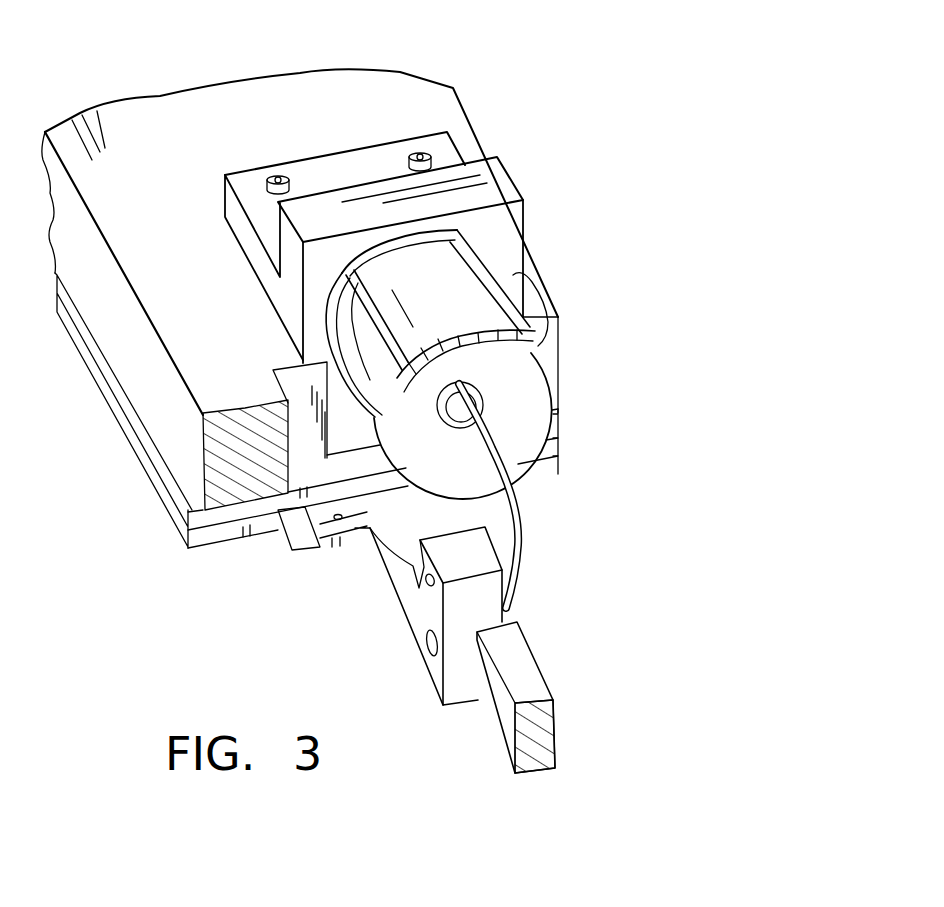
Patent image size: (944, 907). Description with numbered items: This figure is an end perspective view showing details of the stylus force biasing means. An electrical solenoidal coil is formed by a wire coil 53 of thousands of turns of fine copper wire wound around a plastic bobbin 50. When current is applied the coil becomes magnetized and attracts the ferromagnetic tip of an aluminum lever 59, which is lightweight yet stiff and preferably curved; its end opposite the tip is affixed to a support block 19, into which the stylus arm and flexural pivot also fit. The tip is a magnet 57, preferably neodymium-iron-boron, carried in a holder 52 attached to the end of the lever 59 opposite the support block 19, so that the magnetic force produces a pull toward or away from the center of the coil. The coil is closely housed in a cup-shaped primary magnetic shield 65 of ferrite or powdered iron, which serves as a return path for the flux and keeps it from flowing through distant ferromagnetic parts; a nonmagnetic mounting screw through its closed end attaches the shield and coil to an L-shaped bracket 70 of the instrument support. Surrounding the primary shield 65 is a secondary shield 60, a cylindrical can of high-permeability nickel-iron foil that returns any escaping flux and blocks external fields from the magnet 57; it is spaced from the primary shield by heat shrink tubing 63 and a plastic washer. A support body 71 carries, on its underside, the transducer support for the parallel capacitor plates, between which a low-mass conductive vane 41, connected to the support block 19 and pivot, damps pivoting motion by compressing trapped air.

The support block 19 is at (437, 670).
The vane 41 is at (288, 538).
The plastic bobbin 50 is at (497, 280).
The holder 52 is at (477, 415).
The wire coil 53 is at (513, 310).
The magnet 57 is at (473, 395).
The lever 59 is at (465, 442).
The secondary shield 60 is at (362, 268).
The heat shrink tubing 63 is at (330, 291).
The primary magnetic shield 65 is at (302, 356).
The L-shaped bracket 70 is at (322, 172).
The support body 71 is at (457, 117).